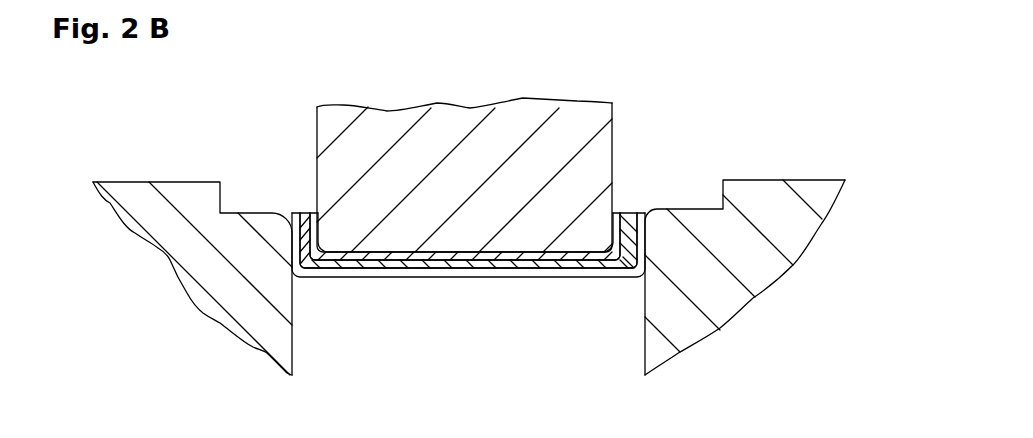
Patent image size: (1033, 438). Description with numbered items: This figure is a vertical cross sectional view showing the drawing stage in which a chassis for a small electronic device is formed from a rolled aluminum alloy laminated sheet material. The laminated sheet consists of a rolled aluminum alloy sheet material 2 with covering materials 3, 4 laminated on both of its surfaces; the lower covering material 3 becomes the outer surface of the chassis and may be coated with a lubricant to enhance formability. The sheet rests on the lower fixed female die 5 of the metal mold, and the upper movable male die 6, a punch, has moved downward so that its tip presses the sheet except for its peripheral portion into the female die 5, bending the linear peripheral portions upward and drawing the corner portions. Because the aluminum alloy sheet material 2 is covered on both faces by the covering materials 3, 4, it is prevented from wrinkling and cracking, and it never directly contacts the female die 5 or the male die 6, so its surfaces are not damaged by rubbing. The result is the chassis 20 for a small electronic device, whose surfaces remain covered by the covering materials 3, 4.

The rolled aluminum alloy sheet material 2 is at (468, 288).
The chassis for a small electronic device 20 is at (442, 268).
The lower covering material 3 is at (548, 279).
The upper covering material 4 is at (580, 250).
The lower fixed female die 5 is at (737, 300).
The upper movable male die 6 is at (575, 120).